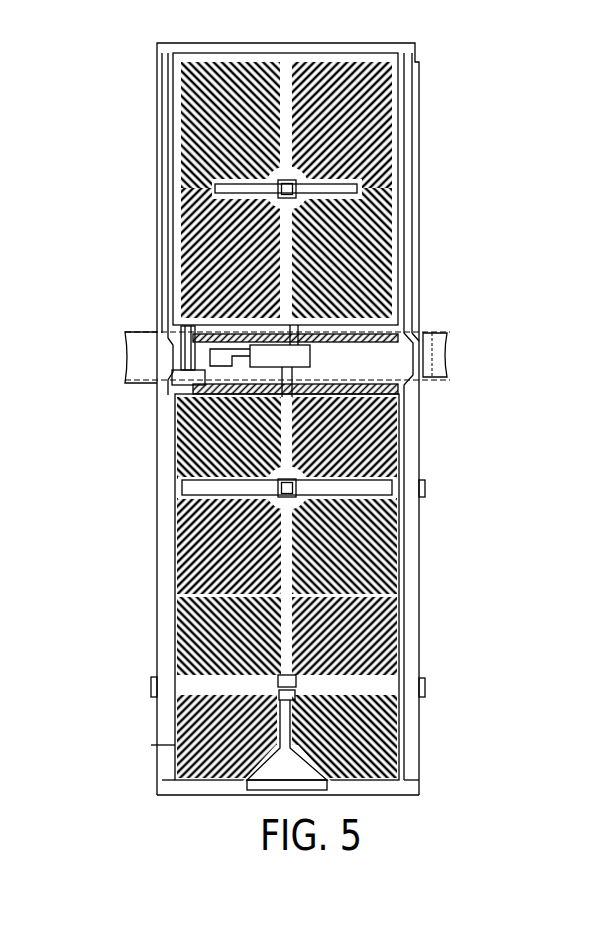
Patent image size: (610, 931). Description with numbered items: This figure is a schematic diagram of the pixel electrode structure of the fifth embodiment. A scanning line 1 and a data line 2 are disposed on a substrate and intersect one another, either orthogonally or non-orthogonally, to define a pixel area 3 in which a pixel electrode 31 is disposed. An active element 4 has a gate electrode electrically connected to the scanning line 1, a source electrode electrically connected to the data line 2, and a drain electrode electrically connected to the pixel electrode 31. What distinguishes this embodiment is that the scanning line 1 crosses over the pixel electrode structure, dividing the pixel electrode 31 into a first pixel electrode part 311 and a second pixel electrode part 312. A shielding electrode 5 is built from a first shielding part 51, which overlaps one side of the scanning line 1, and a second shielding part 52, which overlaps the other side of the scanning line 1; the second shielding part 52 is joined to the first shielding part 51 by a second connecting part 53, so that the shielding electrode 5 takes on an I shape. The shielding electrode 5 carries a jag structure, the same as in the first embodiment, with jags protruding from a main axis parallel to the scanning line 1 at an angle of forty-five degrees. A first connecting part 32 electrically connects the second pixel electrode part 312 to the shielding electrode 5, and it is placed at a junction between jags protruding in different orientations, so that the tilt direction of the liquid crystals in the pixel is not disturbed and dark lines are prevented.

The scanning line 1 is at (140, 350).
The data line 2 is at (162, 105).
The pixel area 3 is at (178, 148).
The pixel electrode 31 is at (234, 189).
The first pixel electrode part 311 is at (186, 243).
The second pixel electrode part 312 is at (178, 632).
The first connecting part 32 is at (296, 398).
The active element 4 is at (172, 367).
The shielding electrode 5 is at (356, 358).
The first shielding part 51 is at (452, 325).
The second shielding part 52 is at (452, 370).
The second connecting part 53 is at (312, 355).